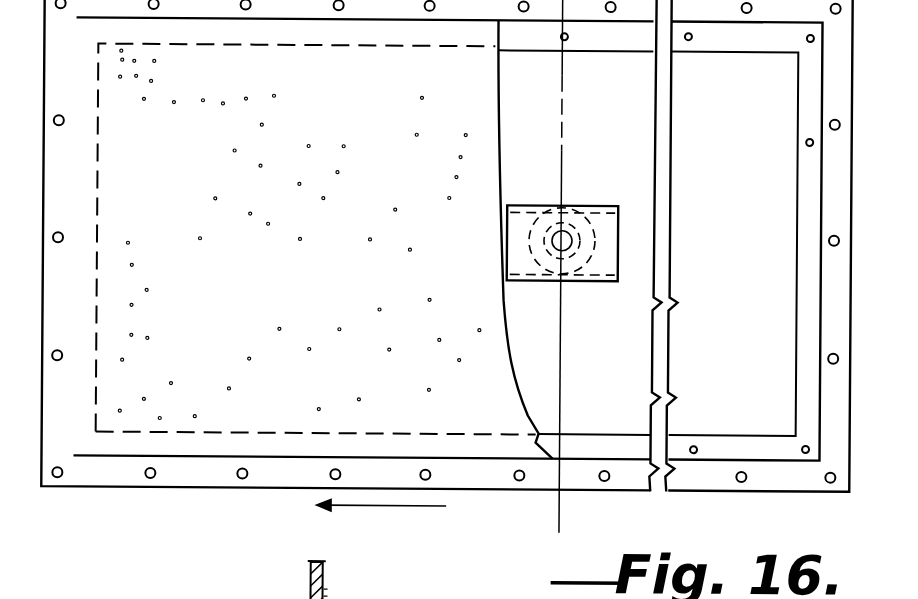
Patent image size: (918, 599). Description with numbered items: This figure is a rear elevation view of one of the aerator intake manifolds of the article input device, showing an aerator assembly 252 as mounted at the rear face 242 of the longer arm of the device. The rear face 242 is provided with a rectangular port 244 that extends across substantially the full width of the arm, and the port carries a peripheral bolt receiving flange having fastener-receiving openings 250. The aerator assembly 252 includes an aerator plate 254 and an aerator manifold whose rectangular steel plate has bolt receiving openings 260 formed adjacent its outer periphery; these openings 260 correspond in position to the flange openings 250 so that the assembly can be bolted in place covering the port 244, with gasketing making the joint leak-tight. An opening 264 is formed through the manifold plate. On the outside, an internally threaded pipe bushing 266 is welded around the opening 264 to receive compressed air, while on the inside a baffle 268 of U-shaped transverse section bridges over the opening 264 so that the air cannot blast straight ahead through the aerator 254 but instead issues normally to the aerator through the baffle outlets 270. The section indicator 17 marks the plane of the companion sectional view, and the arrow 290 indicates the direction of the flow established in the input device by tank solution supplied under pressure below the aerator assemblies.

The aerator assembly 252 is at (158, 497).
The aerator plate 254 is at (365, 288).
The opening 264 is at (592, 203).
The pipe bushing 266 is at (532, 205).
The baffle 268 is at (606, 283).
The baffle outlets 270 is at (622, 229).
The arrow 290 is at (424, 507).
The section line 17- 17 is at (598, 514).
The rear face 242 is at (327, 580).
The rectangular port 244 is at (286, 580).
The fastener-receiving openings 250 is at (357, 598).
The bolt receiving openings 260 is at (380, 598).